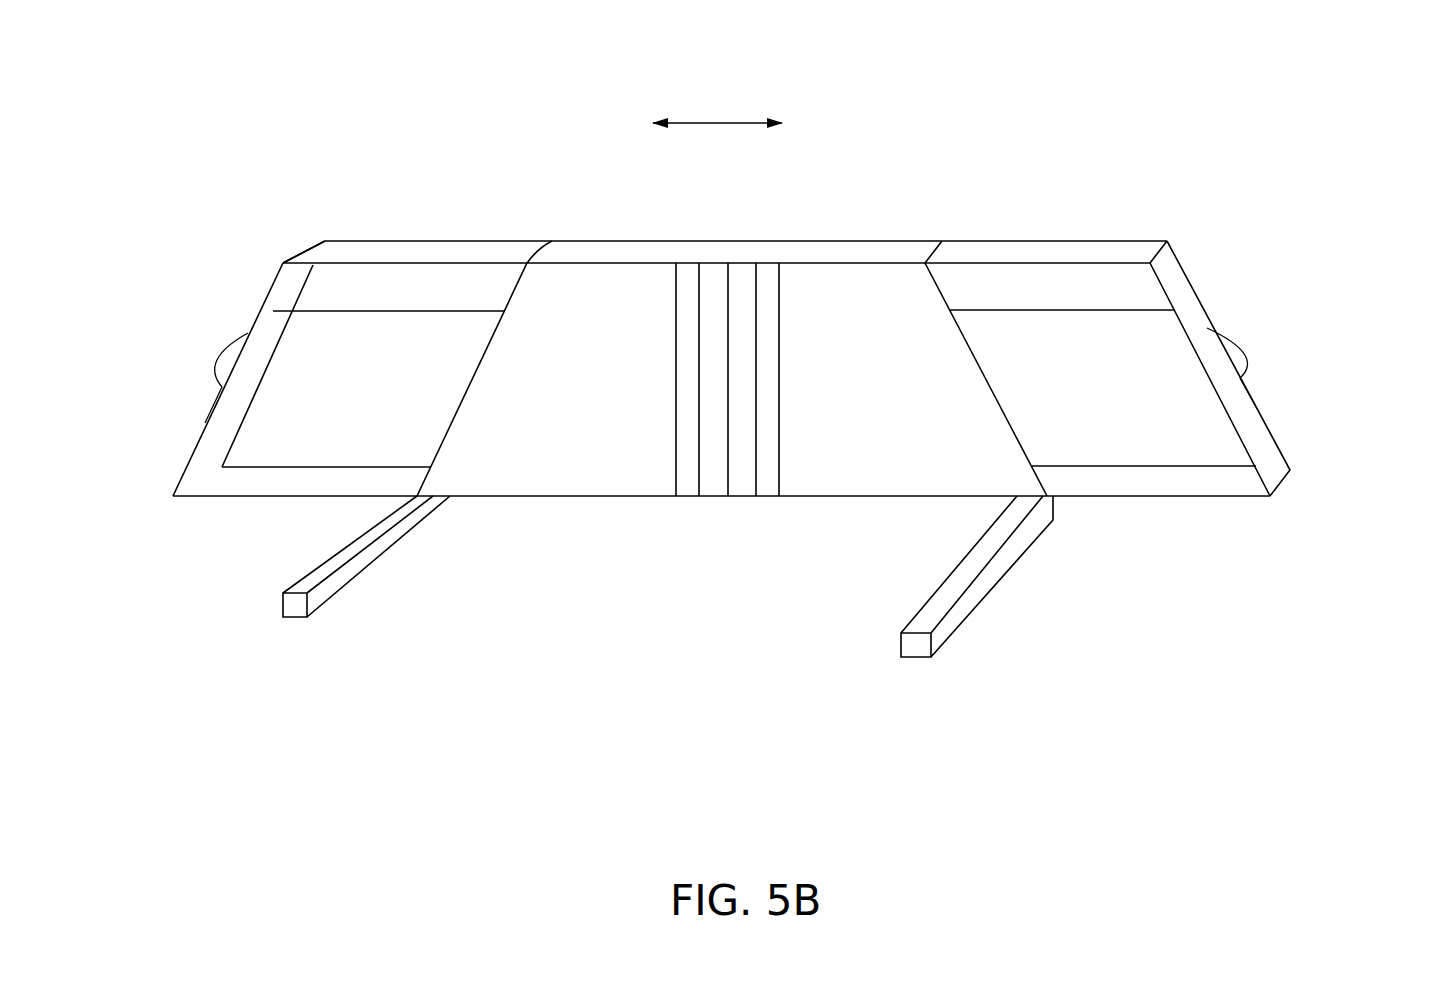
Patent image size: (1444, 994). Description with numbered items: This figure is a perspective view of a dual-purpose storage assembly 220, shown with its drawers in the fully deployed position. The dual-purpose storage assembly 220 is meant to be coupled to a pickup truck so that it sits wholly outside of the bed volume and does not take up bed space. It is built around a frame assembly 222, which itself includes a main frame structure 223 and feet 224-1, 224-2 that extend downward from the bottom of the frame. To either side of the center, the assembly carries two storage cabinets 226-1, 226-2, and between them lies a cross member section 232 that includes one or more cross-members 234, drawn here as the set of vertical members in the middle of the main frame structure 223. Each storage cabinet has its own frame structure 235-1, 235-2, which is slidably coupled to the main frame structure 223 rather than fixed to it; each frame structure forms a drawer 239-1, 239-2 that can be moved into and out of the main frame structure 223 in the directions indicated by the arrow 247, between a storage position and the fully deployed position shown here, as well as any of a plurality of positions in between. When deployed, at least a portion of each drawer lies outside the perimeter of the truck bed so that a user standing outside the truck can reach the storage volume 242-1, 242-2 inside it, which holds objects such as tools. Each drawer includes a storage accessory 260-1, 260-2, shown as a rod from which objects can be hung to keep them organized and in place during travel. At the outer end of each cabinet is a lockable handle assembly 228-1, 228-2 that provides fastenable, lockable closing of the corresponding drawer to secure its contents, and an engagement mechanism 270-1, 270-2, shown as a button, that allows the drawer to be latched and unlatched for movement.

The dual-purpose storage assembly 220 is at (1193, 142).
The frame assembly 222 is at (858, 130).
The main frame structure 223 is at (848, 198).
The foot 224-1 is at (282, 617).
The foot 224-2 is at (942, 647).
The storage cabinet 226-1 is at (308, 350).
The storage cabinet 226-2 is at (1182, 362).
The lockable handle assembly 228-1 is at (222, 383).
The lockable handle assembly 228-2 is at (1243, 366).
The cross member section 232 is at (720, 513).
The cross-members 234 is at (756, 275).
The frame structure 235-1 is at (207, 423).
The frame structure 235-2 is at (1275, 435).
The drawer 239-1 is at (427, 225).
The drawer 239-2 is at (1012, 222).
The storage volume 242-1 is at (307, 443).
The storage volume 242-2 is at (1152, 427).
The arrow 247 is at (703, 123).
The storage accessory 260-1 is at (323, 311).
The storage accessory 260-2 is at (1085, 310).
The engagement mechanism 270-1 is at (218, 352).
The engagement mechanism 270-2 is at (1243, 342).